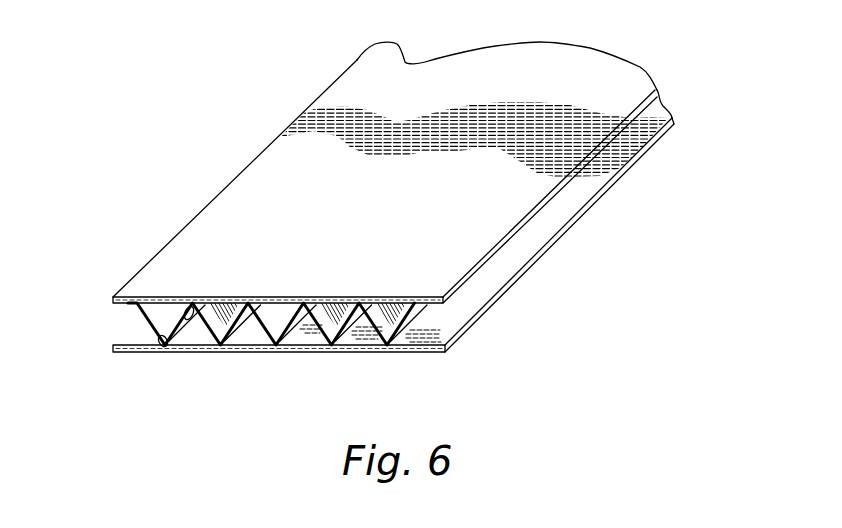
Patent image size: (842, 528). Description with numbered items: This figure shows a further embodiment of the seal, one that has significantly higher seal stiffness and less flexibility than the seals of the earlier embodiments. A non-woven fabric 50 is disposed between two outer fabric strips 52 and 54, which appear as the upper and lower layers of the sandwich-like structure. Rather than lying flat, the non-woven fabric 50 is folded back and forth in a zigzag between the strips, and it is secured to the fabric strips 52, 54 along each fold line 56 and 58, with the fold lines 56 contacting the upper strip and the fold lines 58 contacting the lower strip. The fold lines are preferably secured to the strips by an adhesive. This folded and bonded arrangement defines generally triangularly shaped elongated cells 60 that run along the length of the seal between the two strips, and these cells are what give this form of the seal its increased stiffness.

The non-woven fabric 50 is at (367, 224).
The fabric strip 52 is at (247, 200).
The fabric strip 54 is at (197, 353).
The fold line 56 is at (187, 315).
The fold line 58 is at (155, 340).
The triangularly shaped elongated cell 60 is at (310, 340).